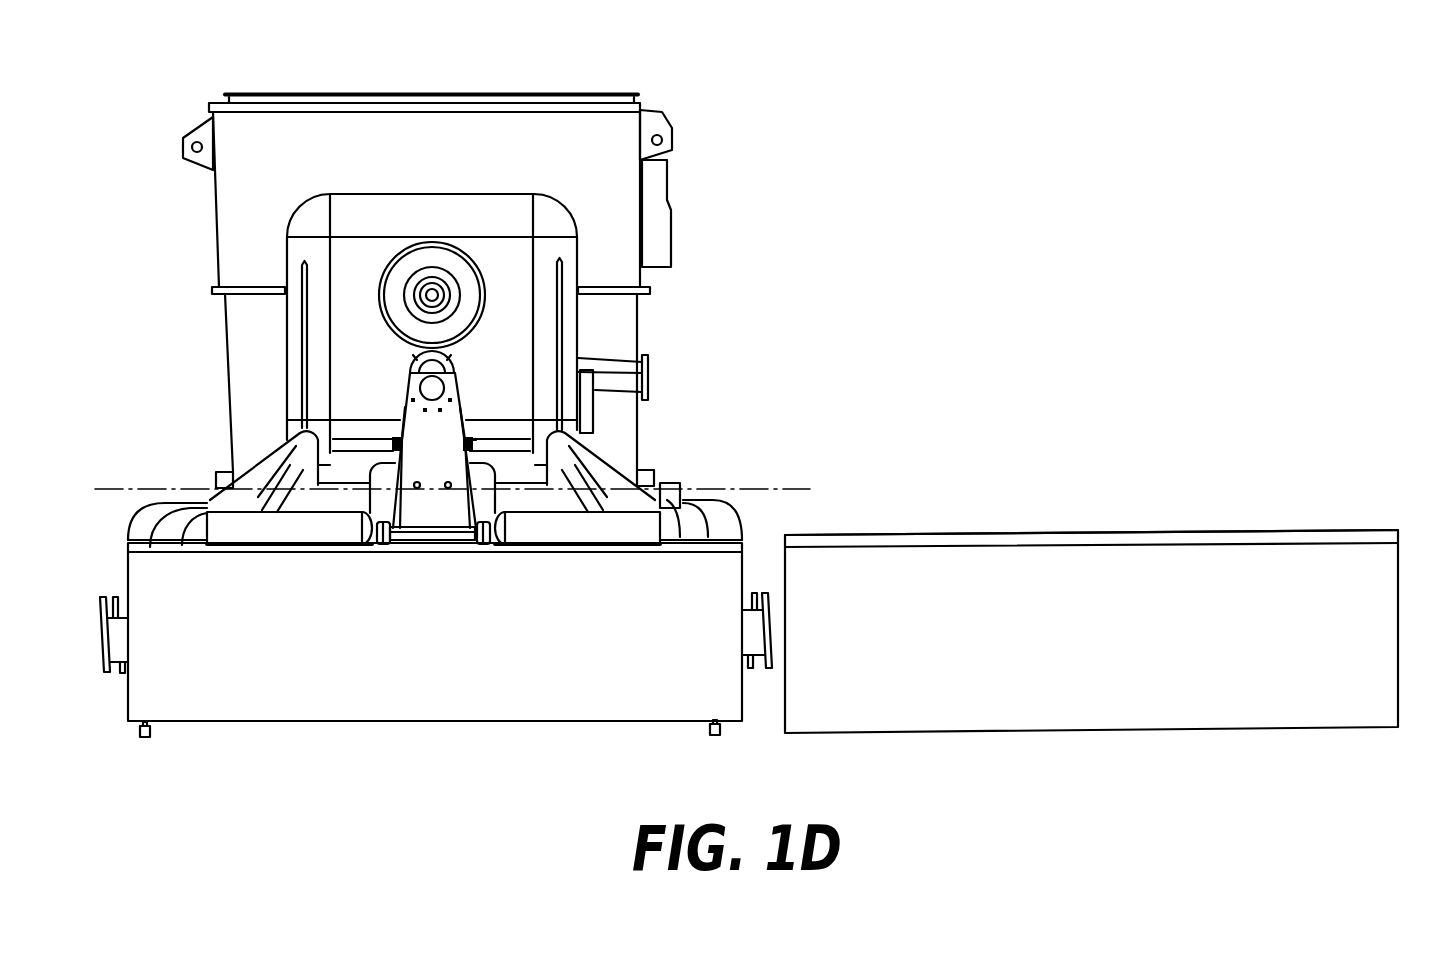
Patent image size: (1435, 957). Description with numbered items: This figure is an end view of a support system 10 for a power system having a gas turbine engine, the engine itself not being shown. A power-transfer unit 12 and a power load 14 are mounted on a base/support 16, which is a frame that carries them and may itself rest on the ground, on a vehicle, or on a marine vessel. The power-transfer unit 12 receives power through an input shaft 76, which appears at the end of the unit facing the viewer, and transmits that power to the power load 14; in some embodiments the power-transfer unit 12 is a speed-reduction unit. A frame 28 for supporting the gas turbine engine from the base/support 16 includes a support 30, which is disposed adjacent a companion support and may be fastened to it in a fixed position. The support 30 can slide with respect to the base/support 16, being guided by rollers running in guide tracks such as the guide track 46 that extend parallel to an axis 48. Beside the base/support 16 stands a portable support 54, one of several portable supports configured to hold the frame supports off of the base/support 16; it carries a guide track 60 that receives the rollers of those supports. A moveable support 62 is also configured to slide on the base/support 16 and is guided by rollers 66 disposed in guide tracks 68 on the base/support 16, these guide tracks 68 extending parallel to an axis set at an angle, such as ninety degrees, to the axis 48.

The support system 10 is at (793, 322).
The power-transfer unit 12 is at (578, 240).
The power load 14 is at (632, 128).
The base/support 16 is at (527, 707).
The frame 28 is at (632, 500).
The support 30 is at (653, 527).
The guide track 46 is at (150, 547).
The axis 48 is at (168, 490).
The portable support 54 is at (1383, 608).
The guide track 60 is at (1203, 533).
The moveable support 62 is at (447, 428).
The rollers 66 is at (380, 545).
The guide tracks 68 is at (477, 547).
The input shaft 76 is at (457, 271).